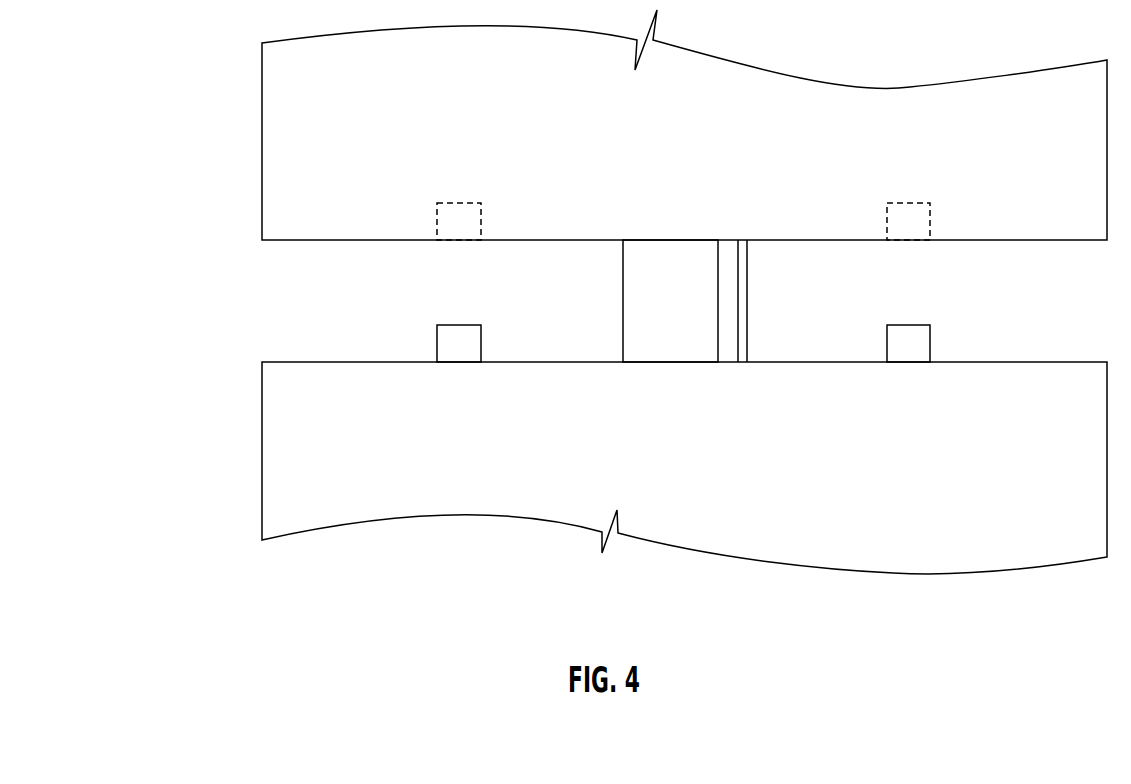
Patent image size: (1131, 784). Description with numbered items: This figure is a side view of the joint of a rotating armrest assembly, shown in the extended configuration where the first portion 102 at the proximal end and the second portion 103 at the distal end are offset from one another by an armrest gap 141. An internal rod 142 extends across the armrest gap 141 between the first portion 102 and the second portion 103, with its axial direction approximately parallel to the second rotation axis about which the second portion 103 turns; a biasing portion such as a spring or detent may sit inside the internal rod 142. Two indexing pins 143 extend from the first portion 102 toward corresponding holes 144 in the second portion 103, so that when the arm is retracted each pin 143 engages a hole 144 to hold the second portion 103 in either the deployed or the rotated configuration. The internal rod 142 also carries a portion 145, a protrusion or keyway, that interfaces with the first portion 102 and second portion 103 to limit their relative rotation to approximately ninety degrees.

The second portion 103 is at (302, 108).
The first portion 102 is at (290, 482).
The armrest gap 141 is at (307, 327).
The internal rod 142 is at (682, 280).
The indexing pin 143 is at (455, 343).
The hole 144 is at (455, 222).
The portion 145 is at (728, 342).